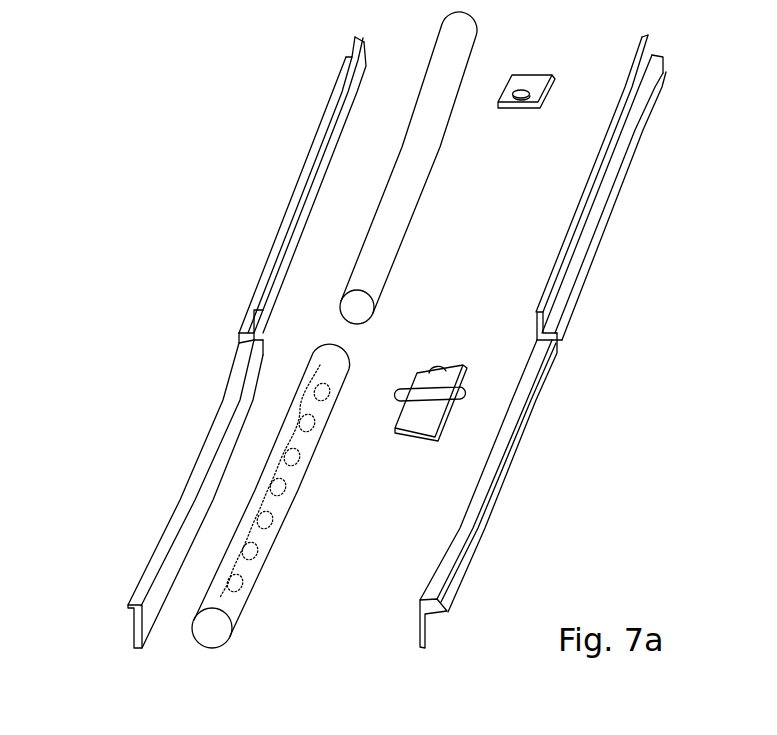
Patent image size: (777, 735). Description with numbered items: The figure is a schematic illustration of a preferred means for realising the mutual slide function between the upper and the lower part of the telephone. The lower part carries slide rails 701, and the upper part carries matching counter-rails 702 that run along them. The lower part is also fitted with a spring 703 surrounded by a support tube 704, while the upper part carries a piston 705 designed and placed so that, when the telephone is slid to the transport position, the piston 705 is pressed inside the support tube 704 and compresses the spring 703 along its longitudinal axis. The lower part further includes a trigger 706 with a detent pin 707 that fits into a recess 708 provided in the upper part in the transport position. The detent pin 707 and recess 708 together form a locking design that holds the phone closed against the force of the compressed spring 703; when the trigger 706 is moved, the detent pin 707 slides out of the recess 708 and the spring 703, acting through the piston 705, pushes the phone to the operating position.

The slide rails 701 is at (130, 612).
The counter-rails 702 is at (274, 270).
The spring 703 is at (258, 528).
The support tube 704 is at (277, 500).
The piston 705 is at (399, 242).
The trigger 706 is at (415, 412).
The detent pin 707 is at (432, 370).
The recess 708 is at (541, 100).